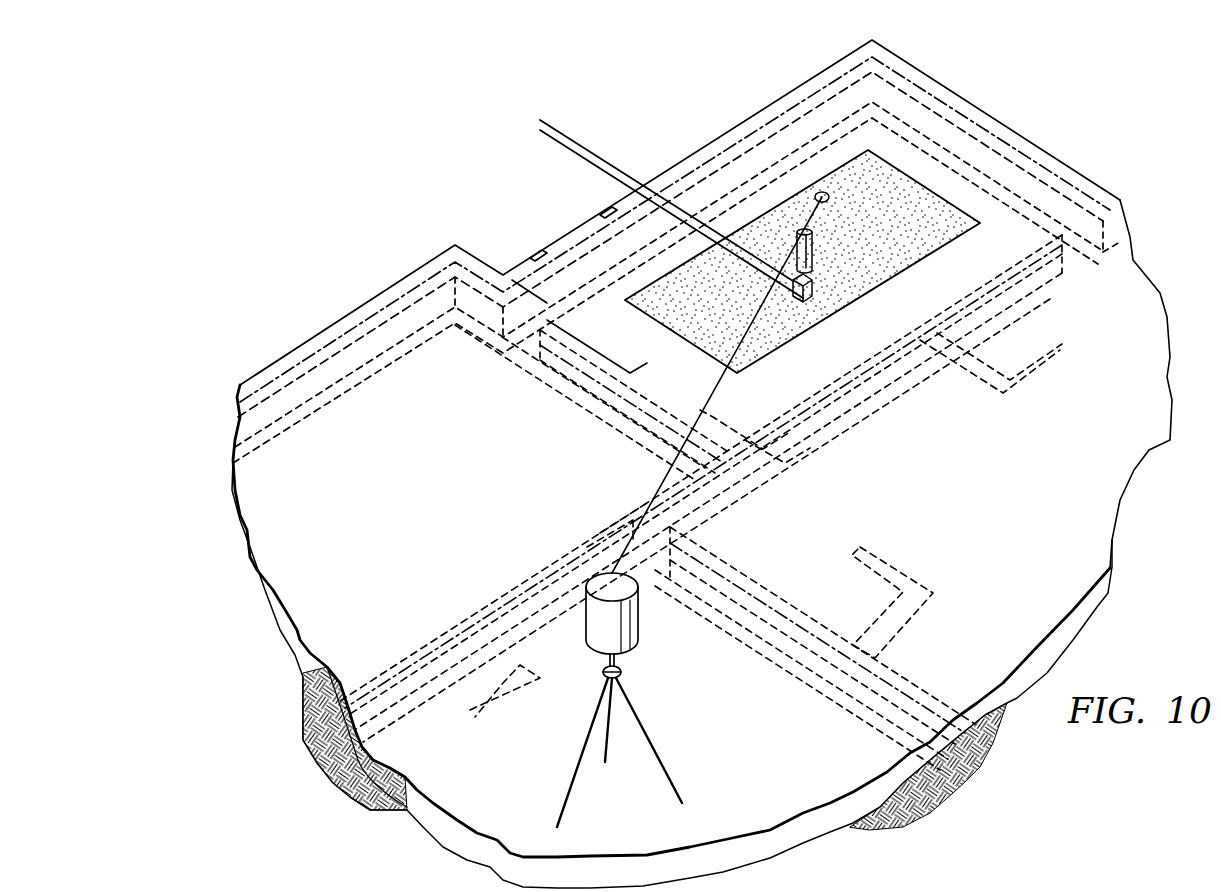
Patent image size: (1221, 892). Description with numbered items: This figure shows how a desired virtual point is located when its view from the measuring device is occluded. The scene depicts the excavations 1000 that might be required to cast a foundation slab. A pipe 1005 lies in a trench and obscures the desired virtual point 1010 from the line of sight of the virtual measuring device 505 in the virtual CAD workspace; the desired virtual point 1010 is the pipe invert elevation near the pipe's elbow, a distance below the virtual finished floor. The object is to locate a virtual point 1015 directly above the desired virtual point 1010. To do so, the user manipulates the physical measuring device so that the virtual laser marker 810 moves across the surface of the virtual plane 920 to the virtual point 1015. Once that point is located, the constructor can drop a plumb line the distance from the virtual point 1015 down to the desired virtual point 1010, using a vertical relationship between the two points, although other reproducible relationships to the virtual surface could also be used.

The excavations 1000 is at (1140, 609).
The virtual plane 920 is at (889, 282).
The pipe 1005 is at (578, 142).
The virtual point 1010 is at (806, 302).
The virtual point 1015 is at (810, 233).
The virtual laser marker 810 is at (672, 467).
The virtual measuring device 505 is at (650, 666).